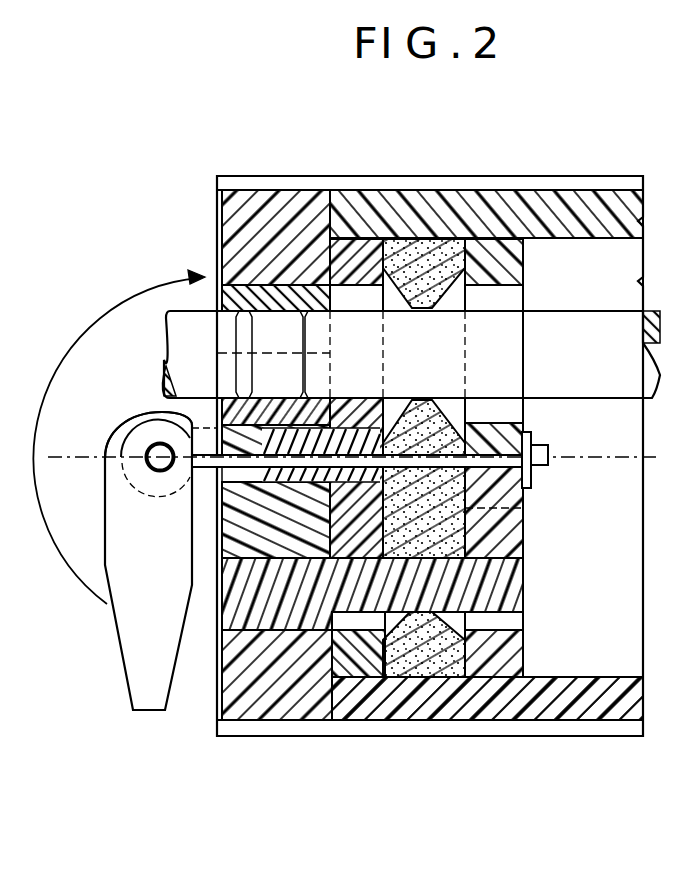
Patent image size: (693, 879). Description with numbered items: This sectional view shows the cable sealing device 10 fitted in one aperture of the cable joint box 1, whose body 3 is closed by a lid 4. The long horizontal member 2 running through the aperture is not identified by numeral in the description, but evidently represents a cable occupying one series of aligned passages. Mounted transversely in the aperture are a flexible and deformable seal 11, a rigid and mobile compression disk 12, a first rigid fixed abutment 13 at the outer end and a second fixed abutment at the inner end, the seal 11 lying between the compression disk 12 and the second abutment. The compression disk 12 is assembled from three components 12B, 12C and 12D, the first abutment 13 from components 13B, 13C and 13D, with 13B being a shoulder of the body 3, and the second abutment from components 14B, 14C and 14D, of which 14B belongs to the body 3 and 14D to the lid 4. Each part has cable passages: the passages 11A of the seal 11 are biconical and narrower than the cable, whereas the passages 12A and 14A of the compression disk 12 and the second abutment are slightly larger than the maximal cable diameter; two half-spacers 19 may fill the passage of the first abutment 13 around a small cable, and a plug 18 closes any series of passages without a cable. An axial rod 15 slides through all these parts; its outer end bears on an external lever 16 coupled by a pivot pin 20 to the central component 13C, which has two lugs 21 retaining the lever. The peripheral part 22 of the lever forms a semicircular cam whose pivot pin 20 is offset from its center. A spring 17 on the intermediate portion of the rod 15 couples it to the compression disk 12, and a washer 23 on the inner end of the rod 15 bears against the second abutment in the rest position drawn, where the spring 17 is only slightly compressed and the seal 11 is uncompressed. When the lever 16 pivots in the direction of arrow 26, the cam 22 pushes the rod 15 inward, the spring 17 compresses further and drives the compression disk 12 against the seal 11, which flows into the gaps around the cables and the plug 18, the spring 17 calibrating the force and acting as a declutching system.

The cable joint box 1 is at (468, 171).
The shaft 2 is at (598, 335).
The body 3 is at (610, 705).
The lid 4 is at (565, 205).
The cable sealing device 10 is at (530, 588).
The seal 11 is at (421, 245).
The passages of the seal 11A is at (430, 655).
The compression disk 12 is at (356, 287).
The passages of the compression disk 12A is at (355, 633).
The component of the compression disk 12B is at (370, 660).
The component of the compression disk 12C is at (345, 535).
The component of the compression disk 12D is at (352, 248).
The first fixed abutment 13 is at (217, 229).
The component of the first fixed abutment 13B is at (278, 680).
The central part of the first fixed abutment 13C is at (250, 512).
The component of the first fixed abutment 13D is at (264, 210).
The passages of the second fixed abutment 14A is at (505, 618).
The component of the second fixed abutment 14B is at (503, 650).
The component of the second fixed abutment 14C is at (505, 530).
The component of the second fixed abutment 14D is at (515, 262).
The axial rod 15 is at (505, 478).
The external lever 16 is at (143, 648).
The spring 17 is at (306, 475).
The plug 18 is at (248, 592).
The half-spacers 19 is at (233, 305).
The pivot pin 20 is at (152, 463).
The lugs 21 is at (122, 440).
The cam 22 is at (133, 418).
The washer 23 is at (532, 436).
The arrow 26 is at (135, 262).